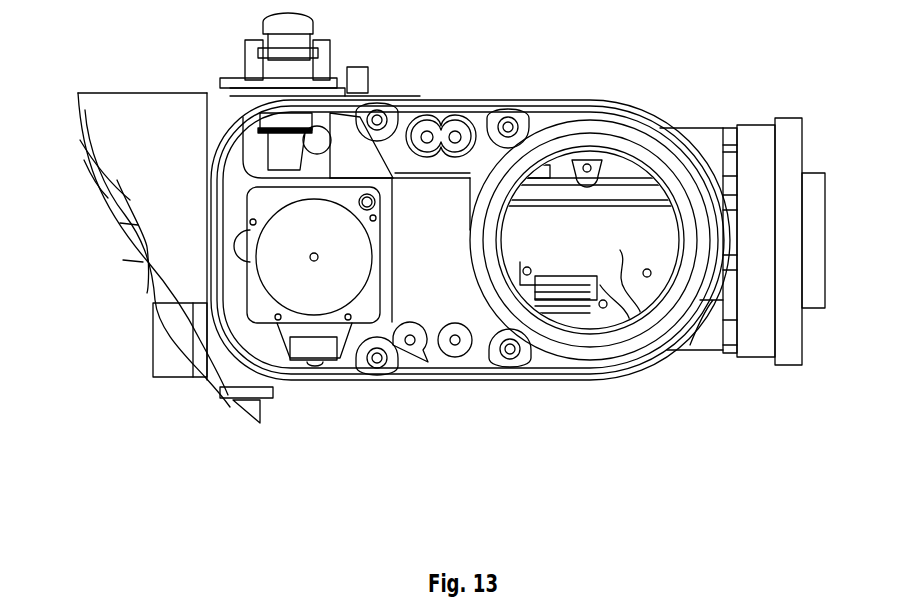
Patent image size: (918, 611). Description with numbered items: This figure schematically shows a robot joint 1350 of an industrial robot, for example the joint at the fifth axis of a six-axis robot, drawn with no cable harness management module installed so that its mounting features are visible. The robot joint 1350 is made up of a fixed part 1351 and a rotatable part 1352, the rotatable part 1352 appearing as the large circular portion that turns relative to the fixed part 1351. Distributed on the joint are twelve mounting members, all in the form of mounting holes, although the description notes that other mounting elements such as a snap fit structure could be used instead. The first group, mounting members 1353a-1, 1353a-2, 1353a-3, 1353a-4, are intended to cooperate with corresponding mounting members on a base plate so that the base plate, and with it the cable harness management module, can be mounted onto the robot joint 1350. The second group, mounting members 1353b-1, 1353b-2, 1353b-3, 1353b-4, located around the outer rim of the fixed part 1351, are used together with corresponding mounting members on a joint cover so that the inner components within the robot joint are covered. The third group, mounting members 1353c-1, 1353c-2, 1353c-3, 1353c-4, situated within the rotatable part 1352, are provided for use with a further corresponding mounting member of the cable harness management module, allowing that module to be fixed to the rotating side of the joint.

The robot joint 1350 is at (750, 38).
The fixed part 1351 is at (428, 332).
The rotatable part 1352 is at (630, 143).
The mounting member 1353a-1 is at (427, 135).
The mounting member 1353a-2 is at (455, 135).
The mounting member 1353a-3 is at (455, 343).
The mounting member 1353a-4 is at (410, 343).
The mounting member 1353b-1 is at (377, 117).
The mounting member 1353b-2 is at (508, 125).
The mounting member 1353b-3 is at (510, 352).
The mounting member 1353b-4 is at (377, 360).
The mounting member 1353c-1 is at (587, 172).
The mounting member 1353c-2 is at (645, 268).
The mounting member 1353c-3 is at (603, 300).
The mounting member 1353c-4 is at (530, 267).